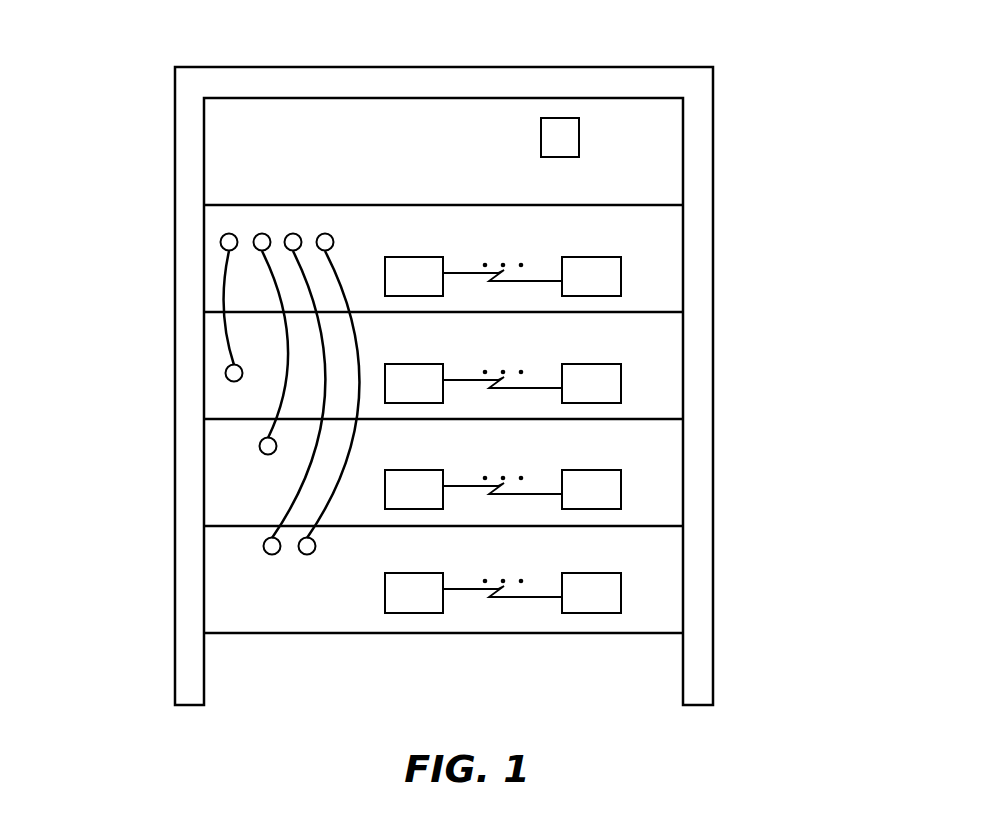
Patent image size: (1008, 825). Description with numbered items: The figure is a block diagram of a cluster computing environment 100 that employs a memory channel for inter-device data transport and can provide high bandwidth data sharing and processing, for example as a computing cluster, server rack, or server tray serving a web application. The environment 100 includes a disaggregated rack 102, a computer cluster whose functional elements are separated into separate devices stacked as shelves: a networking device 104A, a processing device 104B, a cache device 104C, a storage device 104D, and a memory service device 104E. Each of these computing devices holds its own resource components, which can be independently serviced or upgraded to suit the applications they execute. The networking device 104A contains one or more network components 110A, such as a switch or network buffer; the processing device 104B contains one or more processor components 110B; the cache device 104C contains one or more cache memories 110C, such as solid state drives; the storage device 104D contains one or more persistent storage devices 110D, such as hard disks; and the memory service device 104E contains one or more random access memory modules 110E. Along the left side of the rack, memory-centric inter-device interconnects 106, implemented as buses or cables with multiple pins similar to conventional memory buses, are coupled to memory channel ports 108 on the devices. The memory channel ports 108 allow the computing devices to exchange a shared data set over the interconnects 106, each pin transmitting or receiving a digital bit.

The cluster computing environment 100 is at (133, 28).
The disaggregated rack 102 is at (174, 90).
The networking device 104A is at (660, 139).
The processing device 104B is at (657, 238).
The cache device 104C is at (657, 345).
The storage device 104D is at (657, 453).
The memory service device 104E is at (657, 555).
The memory-centric inter-device interconnects 106 is at (357, 400).
The memory channel ports 108 is at (320, 236).
The network components 110A is at (575, 132).
The processor components 110B is at (621, 265).
The cache memories 110C is at (621, 383).
The persistent storage devices 110D is at (606, 500).
The random access memory modules 110E is at (606, 603).